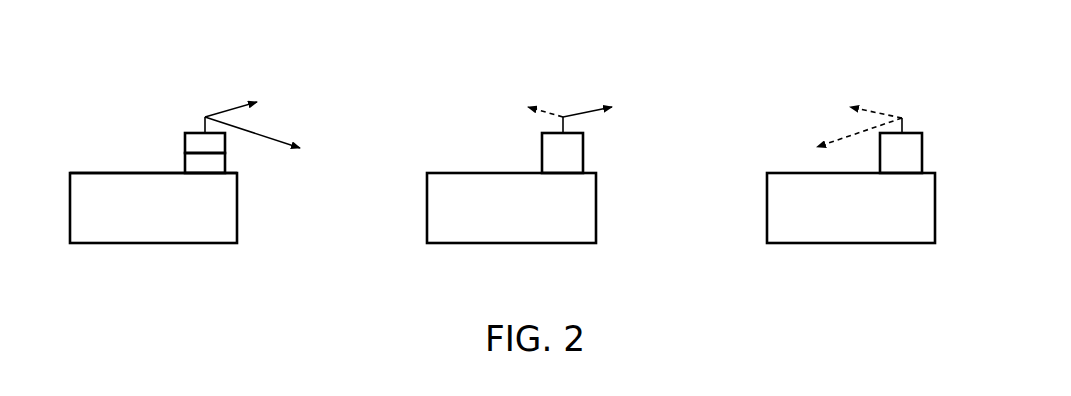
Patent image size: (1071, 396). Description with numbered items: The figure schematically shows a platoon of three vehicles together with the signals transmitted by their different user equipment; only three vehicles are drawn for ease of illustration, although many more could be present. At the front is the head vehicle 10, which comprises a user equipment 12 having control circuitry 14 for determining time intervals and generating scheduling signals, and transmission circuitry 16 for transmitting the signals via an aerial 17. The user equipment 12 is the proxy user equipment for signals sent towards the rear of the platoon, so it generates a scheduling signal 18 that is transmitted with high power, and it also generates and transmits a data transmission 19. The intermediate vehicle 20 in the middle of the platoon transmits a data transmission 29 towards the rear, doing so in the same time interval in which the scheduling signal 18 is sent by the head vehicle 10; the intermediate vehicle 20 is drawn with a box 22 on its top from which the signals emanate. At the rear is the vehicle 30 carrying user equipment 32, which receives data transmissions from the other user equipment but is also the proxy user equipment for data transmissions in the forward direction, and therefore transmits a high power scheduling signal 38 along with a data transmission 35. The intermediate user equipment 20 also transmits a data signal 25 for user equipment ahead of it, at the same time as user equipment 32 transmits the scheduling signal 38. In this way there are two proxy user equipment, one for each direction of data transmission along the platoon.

The head vehicle 10 is at (139, 221).
The user equipment 12 is at (168, 155).
The control circuitry 14 is at (225, 162).
The transmission circuitry 16 is at (225, 140).
The aerial 17 is at (203, 122).
The scheduling signal 18 is at (303, 147).
The data transmission 19 is at (250, 100).
The intermediate vehicle 20 is at (494, 221).
The emitter block 22 is at (573, 158).
The data signal 25 is at (535, 108).
The data transmission 29 is at (610, 105).
The rear vehicle 30 is at (834, 221).
The user equipment 32 is at (910, 158).
The data transmission 35 is at (857, 107).
The scheduling signal 38 is at (827, 142).